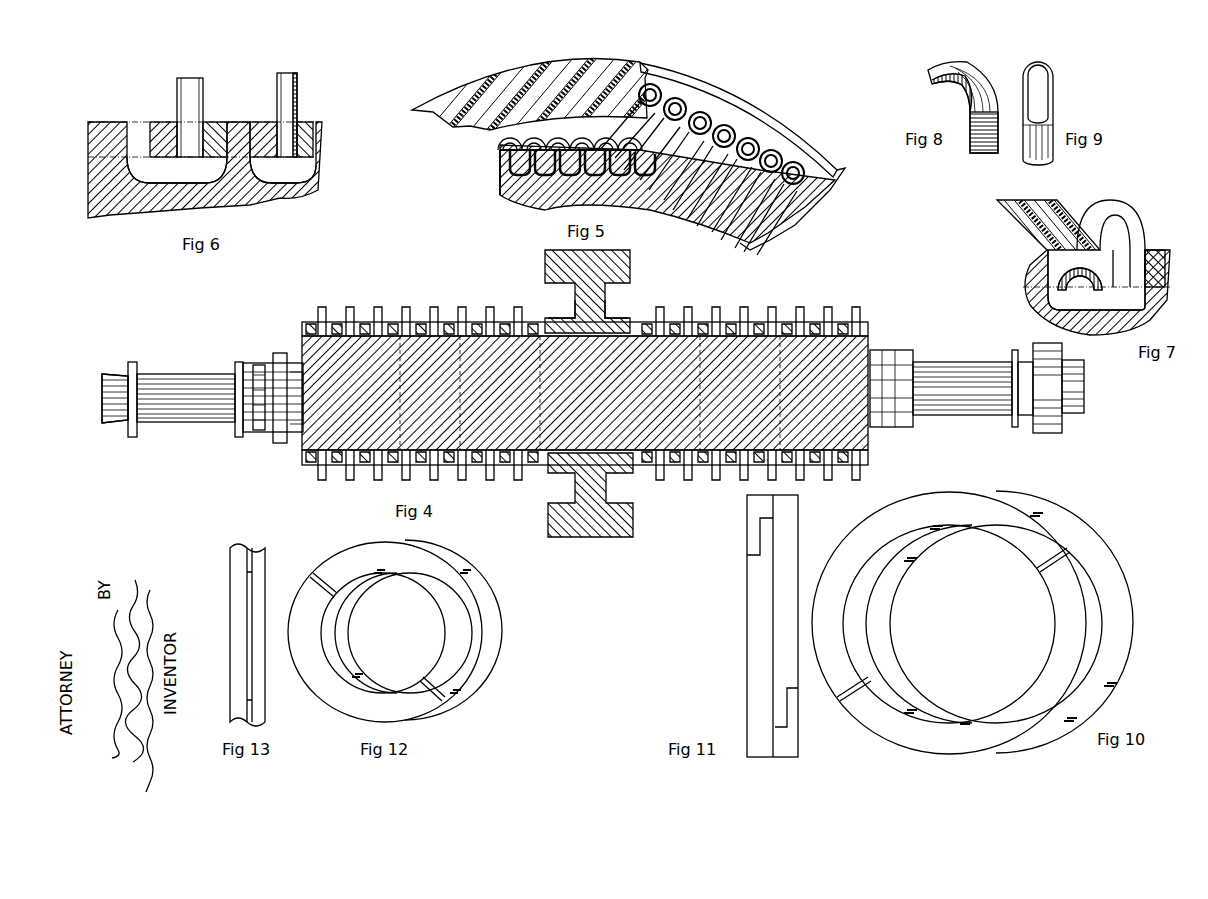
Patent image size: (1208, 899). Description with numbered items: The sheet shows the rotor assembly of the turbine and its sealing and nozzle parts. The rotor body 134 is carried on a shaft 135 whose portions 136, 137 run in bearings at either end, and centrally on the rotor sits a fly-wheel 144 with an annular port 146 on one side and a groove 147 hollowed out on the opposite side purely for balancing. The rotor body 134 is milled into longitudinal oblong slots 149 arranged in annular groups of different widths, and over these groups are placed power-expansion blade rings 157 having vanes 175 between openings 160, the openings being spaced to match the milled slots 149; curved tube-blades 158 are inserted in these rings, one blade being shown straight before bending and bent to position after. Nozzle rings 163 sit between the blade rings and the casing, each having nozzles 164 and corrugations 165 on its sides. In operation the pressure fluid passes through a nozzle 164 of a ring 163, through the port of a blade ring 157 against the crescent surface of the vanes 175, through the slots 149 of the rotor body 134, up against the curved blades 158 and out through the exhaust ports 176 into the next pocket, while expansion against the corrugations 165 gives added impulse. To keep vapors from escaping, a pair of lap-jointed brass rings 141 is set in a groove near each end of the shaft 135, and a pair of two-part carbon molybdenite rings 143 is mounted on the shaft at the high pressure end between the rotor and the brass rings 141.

In FIG. 4, the rotor body 134 is at (870, 336).
In FIG. 5, the rotor body 134 is at (545, 208).
In FIG. 6, the rotor body 134 is at (133, 218).
In FIG. 7, the rotor body 134 is at (1096, 292).
In FIG. 4, the shaft 135 is at (102, 408).
In FIG. 4, the shaft portion 136 is at (165, 374).
In FIG. 4, the shaft portion 137 is at (938, 363).
In FIG. 10, the brass rings 141 is at (893, 616).
In FIG. 11, the brass rings 141 is at (747, 590).
In FIG. 12, the carbon molybdenite rings 143 is at (497, 602).
In FIG. 13, the carbon molybdenite rings 143 is at (265, 584).
In FIG. 4, the fly-wheel 144 is at (630, 270).
In FIG. 4, the annular port 146 is at (556, 300).
In FIG. 4, the groove 147 is at (618, 300).
In FIG. 5, the longitudinal oblong slots 149 is at (508, 178).
In FIG. 6, the longitudinal oblong slots 149 is at (221, 170).
In FIG. 7, the longitudinal oblong slots 149 is at (1096, 280).
In FIG. 4, the power-expansion blade rings 157 is at (528, 465).
In FIG. 5, the power-expansion blade rings 157 is at (500, 152).
In FIG. 6, the power-expansion blade rings 157 is at (306, 120).
In FIG. 7, the power-expansion blade rings 157 is at (1150, 250).
In FIG. 4, the blades 158 is at (538, 482).
In FIG. 5, the blades 158 is at (700, 100).
In FIG. 6, the blades 158 is at (298, 88).
In FIG. 7, the blades 158 is at (1125, 207).
In FIG. 8, the blades 158 is at (1030, 70).
In FIG. 9, the blades 158 is at (1038, 113).
In FIG. 4, the openings 160 is at (318, 462).
In FIG. 5, the openings 160 is at (502, 192).
In FIG. 5, the rings 163 is at (458, 84).
In FIG. 7, the rings 163 is at (997, 207).
In FIG. 5, the nozzles 164 is at (515, 73).
In FIG. 7, the nozzles 164 is at (1018, 205).
In FIG. 5, the corrugations 165 is at (665, 80).
In FIG. 5, the vanes 175 is at (500, 140).
In FIG. 6, the vanes 175 is at (232, 122).
In FIG. 7, the vanes 175 is at (1080, 270).
In FIG. 5, the ports 176 is at (760, 118).